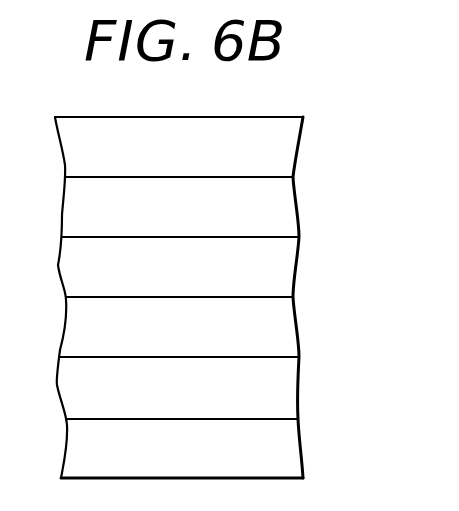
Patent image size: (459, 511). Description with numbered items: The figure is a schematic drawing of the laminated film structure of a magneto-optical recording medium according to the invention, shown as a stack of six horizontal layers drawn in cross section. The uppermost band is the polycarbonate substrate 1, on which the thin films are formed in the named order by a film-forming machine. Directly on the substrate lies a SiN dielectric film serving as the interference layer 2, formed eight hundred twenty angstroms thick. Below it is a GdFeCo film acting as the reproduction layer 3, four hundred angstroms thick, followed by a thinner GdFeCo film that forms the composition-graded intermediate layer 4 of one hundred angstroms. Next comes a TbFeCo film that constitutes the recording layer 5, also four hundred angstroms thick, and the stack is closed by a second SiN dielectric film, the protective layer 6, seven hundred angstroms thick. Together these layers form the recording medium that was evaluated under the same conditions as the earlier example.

The polycarbonate substrate 1 is at (290, 146).
The interference layer 2 is at (283, 208).
The reproduction layer 3 is at (288, 271).
The composition-graded intermediate layer 4 is at (288, 331).
The recording layer 5 is at (292, 391).
The protective layer 6 is at (290, 451).